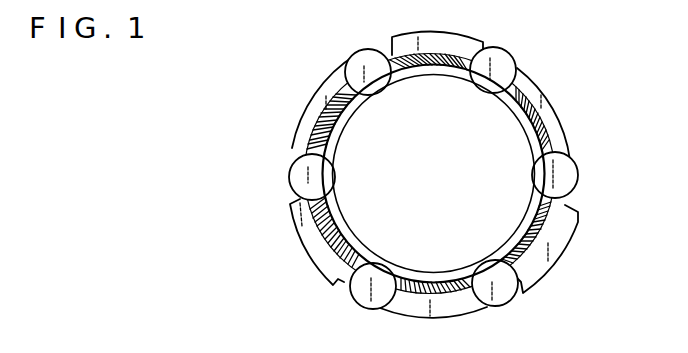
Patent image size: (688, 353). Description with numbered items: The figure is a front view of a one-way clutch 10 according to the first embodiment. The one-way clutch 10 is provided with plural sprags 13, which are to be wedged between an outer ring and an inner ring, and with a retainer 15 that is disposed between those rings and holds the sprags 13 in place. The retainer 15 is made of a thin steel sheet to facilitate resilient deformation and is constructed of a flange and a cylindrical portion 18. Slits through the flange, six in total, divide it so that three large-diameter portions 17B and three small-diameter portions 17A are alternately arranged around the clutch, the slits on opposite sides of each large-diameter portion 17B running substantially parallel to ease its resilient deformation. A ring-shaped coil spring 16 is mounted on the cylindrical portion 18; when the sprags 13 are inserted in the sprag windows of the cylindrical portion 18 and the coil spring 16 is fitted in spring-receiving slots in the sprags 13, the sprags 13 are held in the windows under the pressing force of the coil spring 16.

The one-way clutch 10 is at (264, 76).
The sprags 13 is at (567, 175).
The retainer 15 is at (545, 78).
The coil spring 16 is at (543, 232).
The small-diameter portions 17A is at (312, 120).
The large-diameter portions 17B is at (303, 240).
The cylindrical portion 18 is at (493, 273).